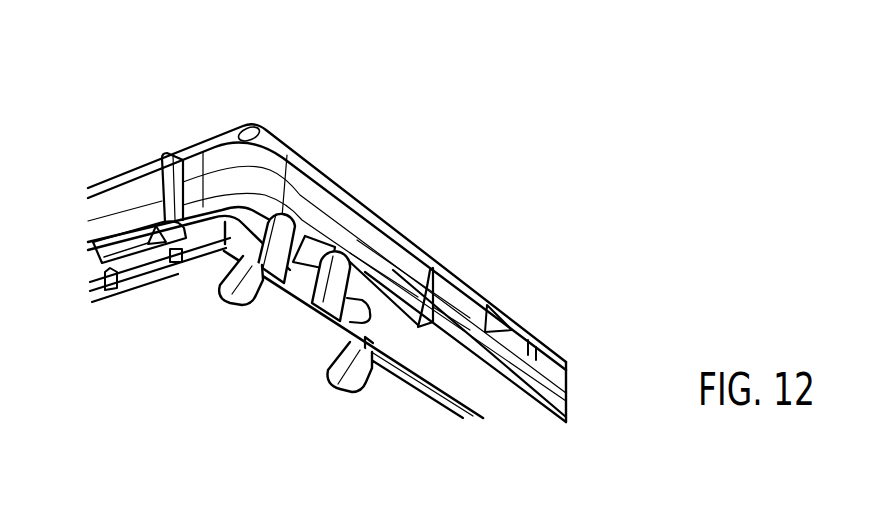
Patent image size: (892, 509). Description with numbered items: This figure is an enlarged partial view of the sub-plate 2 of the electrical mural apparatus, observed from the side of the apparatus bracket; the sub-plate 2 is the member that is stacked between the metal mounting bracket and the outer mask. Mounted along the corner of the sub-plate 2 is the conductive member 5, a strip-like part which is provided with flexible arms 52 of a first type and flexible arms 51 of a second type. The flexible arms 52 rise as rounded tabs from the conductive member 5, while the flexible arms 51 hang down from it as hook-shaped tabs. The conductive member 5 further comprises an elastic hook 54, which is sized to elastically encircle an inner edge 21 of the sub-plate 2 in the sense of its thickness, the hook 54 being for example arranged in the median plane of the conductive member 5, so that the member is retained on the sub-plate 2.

The sub-plate 2 is at (545, 318).
The inner edge 21 is at (460, 388).
The conductive member 5 is at (282, 313).
The flexible arm of a second type 51 is at (219, 292).
The flexible arm of a first type 52 is at (284, 221).
The elastic hook 54 is at (326, 238).